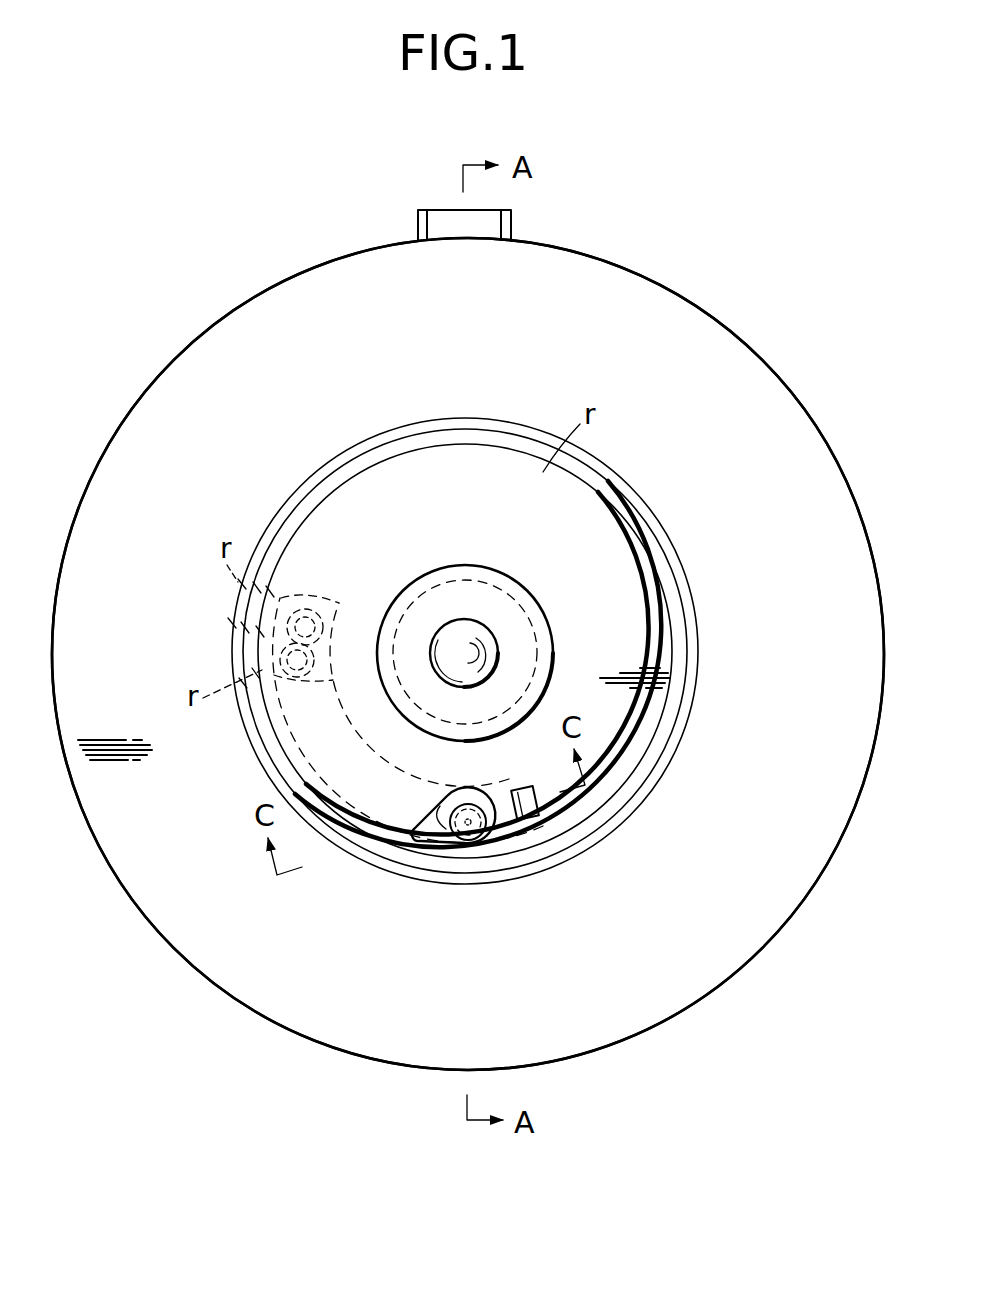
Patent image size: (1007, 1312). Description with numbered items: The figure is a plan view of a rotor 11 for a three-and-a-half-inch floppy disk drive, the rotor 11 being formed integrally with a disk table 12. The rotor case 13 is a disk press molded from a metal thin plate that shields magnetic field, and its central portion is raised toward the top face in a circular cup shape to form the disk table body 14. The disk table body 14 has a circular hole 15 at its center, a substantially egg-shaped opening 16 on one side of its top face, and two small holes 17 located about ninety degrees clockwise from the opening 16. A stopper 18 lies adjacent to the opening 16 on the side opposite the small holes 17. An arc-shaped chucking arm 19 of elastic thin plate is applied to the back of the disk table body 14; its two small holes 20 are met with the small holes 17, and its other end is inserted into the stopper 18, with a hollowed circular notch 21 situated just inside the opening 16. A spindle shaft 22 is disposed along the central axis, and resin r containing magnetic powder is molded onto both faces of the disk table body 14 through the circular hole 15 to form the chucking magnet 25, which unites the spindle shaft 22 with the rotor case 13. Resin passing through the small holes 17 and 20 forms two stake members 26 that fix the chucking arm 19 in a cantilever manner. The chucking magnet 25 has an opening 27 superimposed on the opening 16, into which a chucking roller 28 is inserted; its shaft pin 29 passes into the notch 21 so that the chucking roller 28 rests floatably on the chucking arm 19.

The rotor 11 is at (754, 336).
The disk table 12 is at (676, 540).
The rotor case 13 is at (845, 477).
The disk table body 14 is at (692, 598).
The circular hole 15 is at (442, 585).
The opening 16 is at (472, 795).
The small holes 17 is at (336, 621).
The stopper 18 is at (542, 824).
The chucking arm 19 is at (372, 846).
The small holes 20 is at (340, 594).
The notch 21 is at (461, 866).
The spindle shaft 22 is at (498, 650).
The chucking magnet 25 is at (597, 487).
The stake members 26 is at (230, 622).
The opening 27 is at (470, 790).
The chucking roller 28 is at (451, 829).
The shaft pin 29 is at (492, 882).